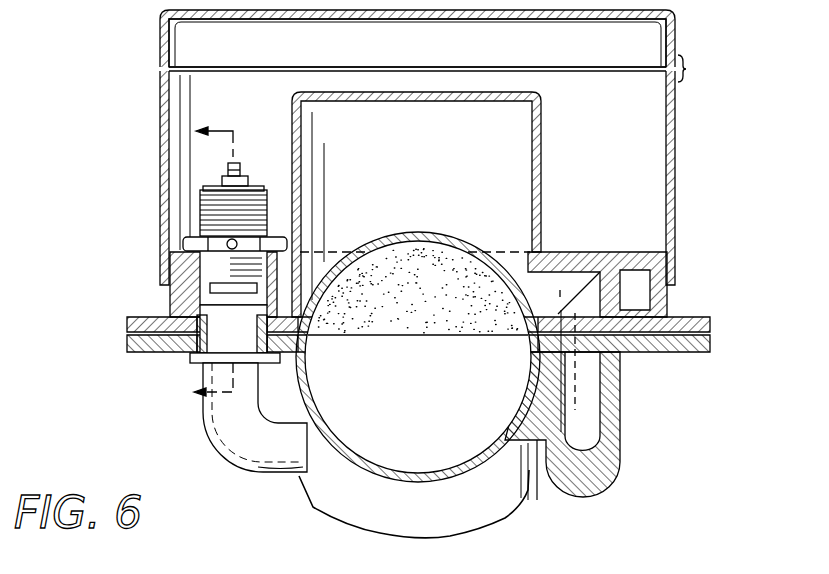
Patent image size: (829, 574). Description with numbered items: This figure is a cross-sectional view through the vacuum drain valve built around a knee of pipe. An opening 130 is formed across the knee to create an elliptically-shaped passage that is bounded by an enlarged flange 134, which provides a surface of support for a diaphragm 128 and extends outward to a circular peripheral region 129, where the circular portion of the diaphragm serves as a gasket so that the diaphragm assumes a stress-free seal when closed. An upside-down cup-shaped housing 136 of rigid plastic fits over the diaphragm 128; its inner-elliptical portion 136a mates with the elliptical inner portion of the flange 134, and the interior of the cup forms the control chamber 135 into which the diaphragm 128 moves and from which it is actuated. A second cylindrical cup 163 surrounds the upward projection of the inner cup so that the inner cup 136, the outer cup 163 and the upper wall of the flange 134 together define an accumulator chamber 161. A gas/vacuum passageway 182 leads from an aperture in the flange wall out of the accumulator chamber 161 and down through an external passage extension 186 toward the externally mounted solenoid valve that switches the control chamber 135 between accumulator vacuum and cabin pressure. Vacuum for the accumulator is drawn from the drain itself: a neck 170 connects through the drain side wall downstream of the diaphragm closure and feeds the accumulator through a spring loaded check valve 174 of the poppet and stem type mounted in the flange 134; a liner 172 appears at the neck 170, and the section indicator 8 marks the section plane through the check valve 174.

The section line 8- 8 is at (217, 262).
The diaphragm 128 is at (441, 236).
The circular peripheral region 129 is at (127, 333).
The opening 130 is at (497, 336).
The enlarged flange 134 is at (711, 345).
The control chamber 135 is at (445, 167).
The cup-shaped housing 136 is at (541, 146).
The inner-elliptical portion 136a is at (668, 297).
The accumulator chamber 161 is at (640, 113).
The second cylindrical cup 163 is at (677, 118).
The neck 170 is at (293, 455).
The conduit liner 172 is at (293, 458).
The spring loaded check valve 174 is at (193, 208).
The gas/vacuum passageway 182 is at (575, 375).
The external passage extension 186 is at (601, 417).